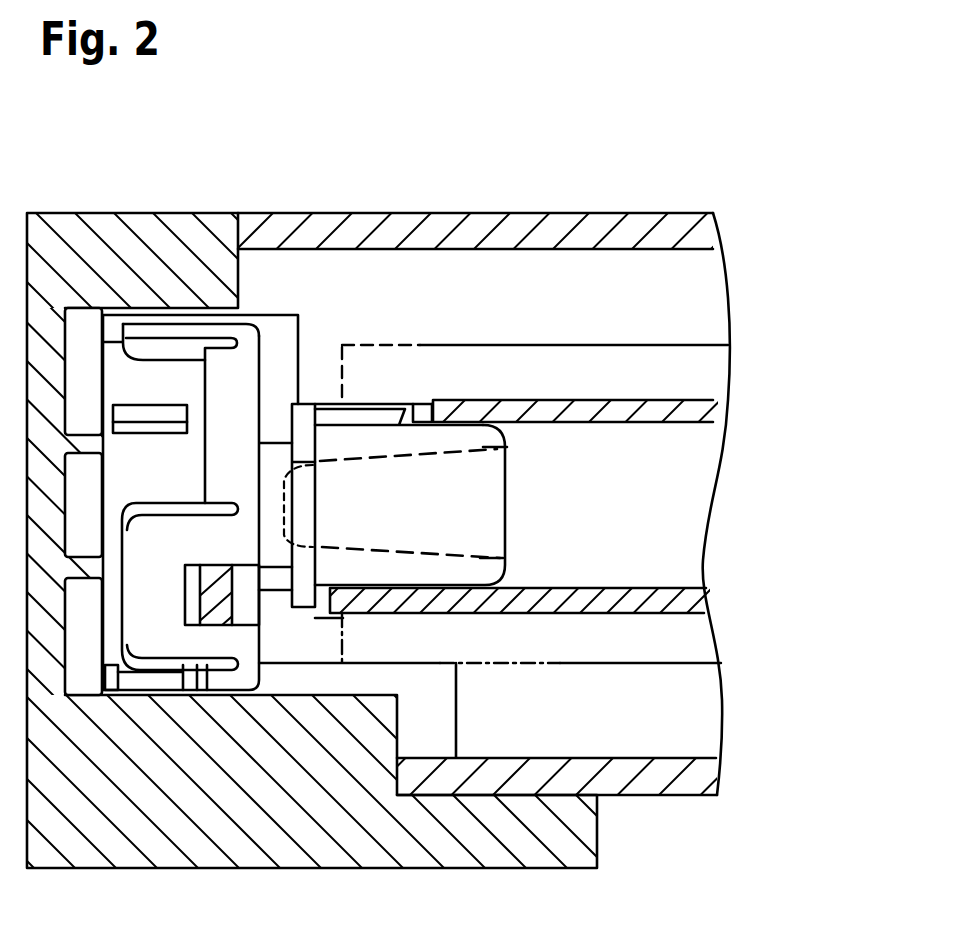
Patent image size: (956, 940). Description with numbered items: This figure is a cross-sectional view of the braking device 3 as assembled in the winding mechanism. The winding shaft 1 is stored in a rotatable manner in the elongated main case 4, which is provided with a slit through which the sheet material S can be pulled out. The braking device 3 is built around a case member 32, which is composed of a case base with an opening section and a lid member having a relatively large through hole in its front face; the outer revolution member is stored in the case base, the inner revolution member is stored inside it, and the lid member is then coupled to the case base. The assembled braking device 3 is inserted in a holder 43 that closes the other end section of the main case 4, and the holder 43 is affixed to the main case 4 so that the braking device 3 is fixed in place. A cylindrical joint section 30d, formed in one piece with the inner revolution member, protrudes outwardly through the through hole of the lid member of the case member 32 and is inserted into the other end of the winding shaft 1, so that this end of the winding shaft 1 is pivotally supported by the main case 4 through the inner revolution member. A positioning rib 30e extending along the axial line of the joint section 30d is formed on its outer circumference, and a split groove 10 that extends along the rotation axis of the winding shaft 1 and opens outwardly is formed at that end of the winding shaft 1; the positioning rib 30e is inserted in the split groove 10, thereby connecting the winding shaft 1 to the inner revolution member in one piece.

The winding shaft 1 is at (707, 410).
The braking device 3 is at (284, 276).
The main case 4 is at (670, 787).
The split groove 10 is at (422, 421).
The joint section 30d is at (478, 467).
The positioning rib 30e is at (354, 420).
The case member 32 is at (168, 643).
The holder 43 is at (302, 820).
The sheet material S is at (683, 628).